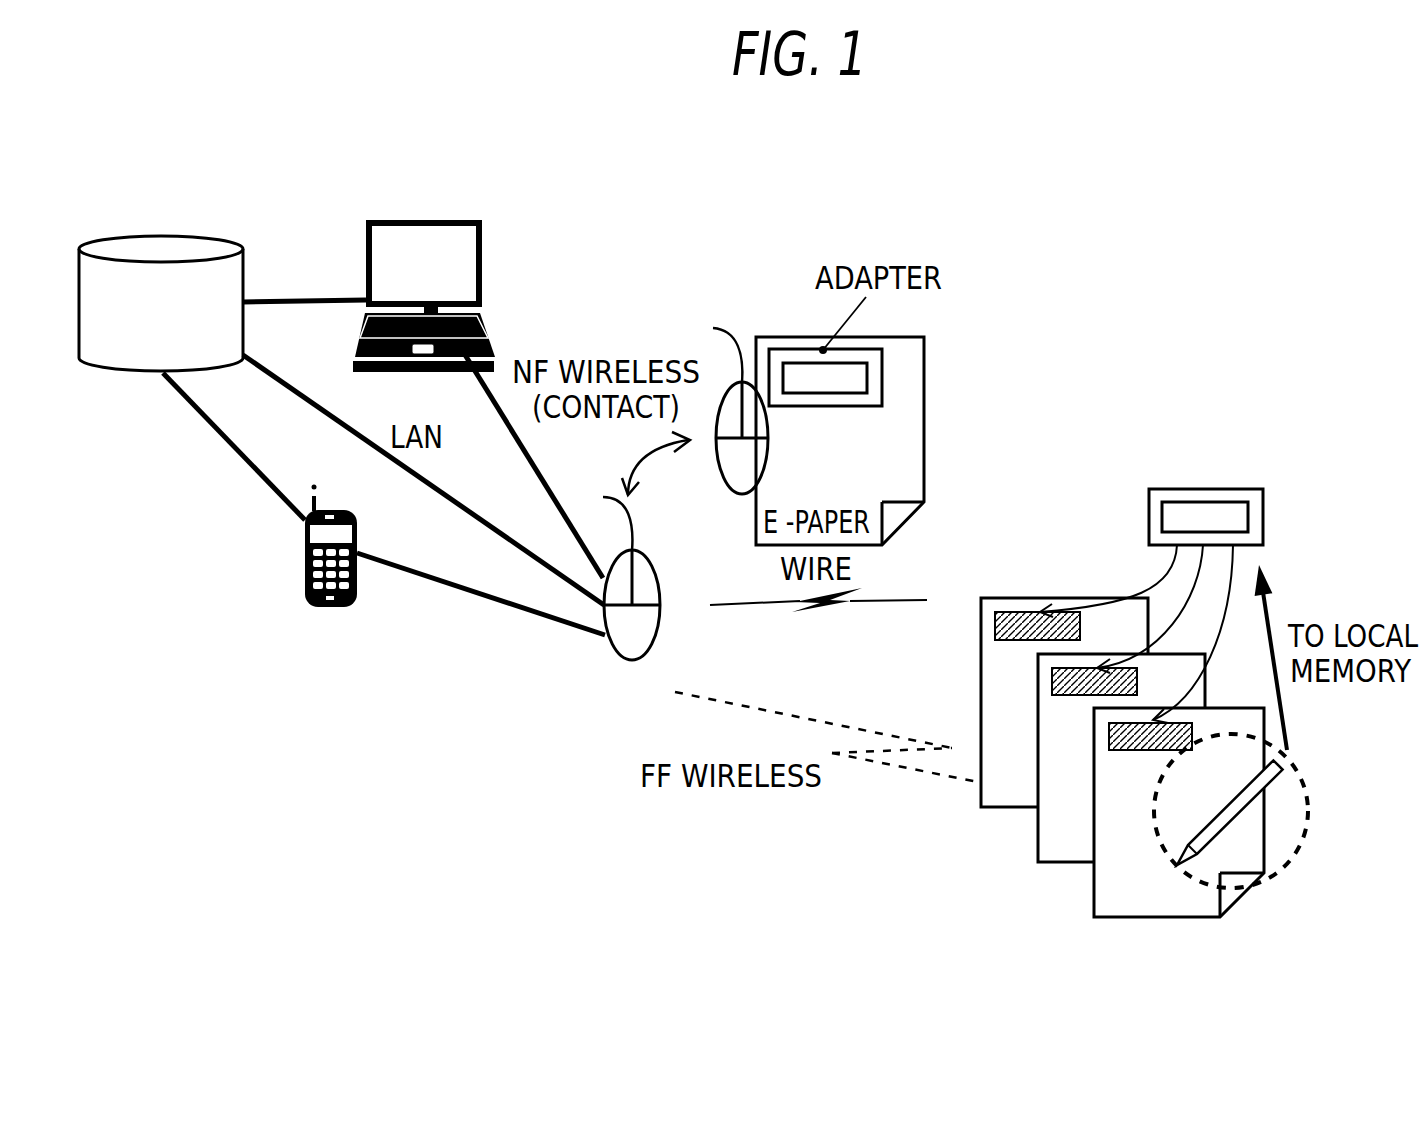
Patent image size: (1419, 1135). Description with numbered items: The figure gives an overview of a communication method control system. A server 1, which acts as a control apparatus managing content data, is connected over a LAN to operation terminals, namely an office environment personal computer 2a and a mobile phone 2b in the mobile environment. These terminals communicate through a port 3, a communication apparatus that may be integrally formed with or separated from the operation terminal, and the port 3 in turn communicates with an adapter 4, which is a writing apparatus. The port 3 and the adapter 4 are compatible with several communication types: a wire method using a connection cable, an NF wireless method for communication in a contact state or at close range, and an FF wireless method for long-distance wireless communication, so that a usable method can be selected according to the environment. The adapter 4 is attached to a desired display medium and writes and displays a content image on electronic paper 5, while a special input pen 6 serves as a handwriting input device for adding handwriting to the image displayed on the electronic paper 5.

The server 1 is at (205, 236).
The personal computer 2a is at (482, 260).
The mobile phone 2b is at (305, 548).
The port 3 is at (628, 662).
The adapter 4 is at (1263, 515).
The electronic paper 5 is at (1094, 892).
The special input pen 6 is at (1273, 785).